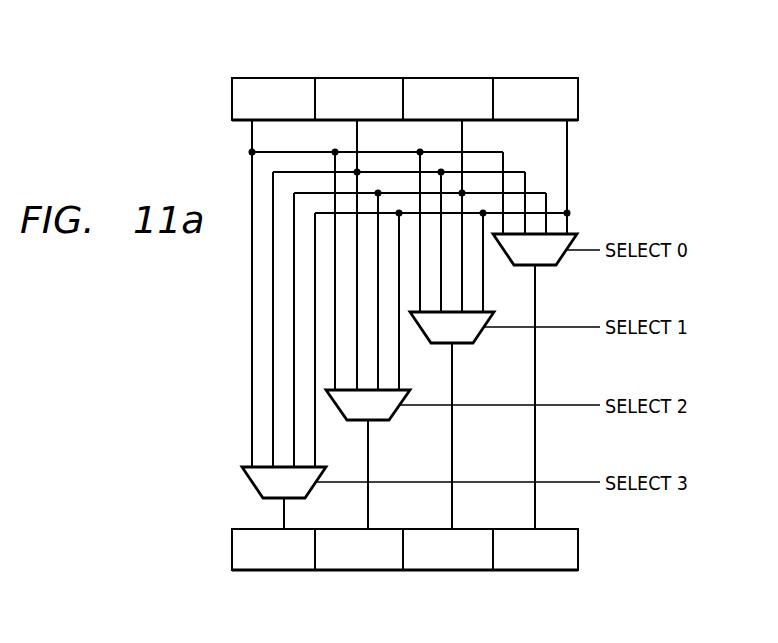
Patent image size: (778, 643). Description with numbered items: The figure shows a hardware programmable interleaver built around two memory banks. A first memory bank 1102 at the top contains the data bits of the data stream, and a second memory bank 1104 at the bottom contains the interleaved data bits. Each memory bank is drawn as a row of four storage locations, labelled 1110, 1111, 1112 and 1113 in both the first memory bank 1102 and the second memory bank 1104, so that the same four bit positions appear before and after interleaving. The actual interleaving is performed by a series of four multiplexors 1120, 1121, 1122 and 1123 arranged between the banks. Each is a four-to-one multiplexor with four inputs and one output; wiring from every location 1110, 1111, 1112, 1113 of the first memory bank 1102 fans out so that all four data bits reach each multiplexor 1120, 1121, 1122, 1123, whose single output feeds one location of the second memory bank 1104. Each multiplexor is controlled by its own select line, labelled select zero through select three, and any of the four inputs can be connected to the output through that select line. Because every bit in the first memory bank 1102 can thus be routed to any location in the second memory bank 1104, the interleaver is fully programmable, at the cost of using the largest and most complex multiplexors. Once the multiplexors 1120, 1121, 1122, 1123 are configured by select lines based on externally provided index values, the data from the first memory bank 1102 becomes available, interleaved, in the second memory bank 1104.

The first memory bank 1102 is at (578, 100).
The second memory bank 1104 is at (578, 548).
The data element 0 1110 is at (273, 83).
The data element 1 1111 is at (362, 83).
The data element 2 1112 is at (445, 83).
The data element 3 1113 is at (535, 83).
The multiplexor 1120 is at (250, 478).
The multiplexor 1121 is at (378, 421).
The multiplexor 1122 is at (462, 344).
The multiplexor 1123 is at (547, 266).